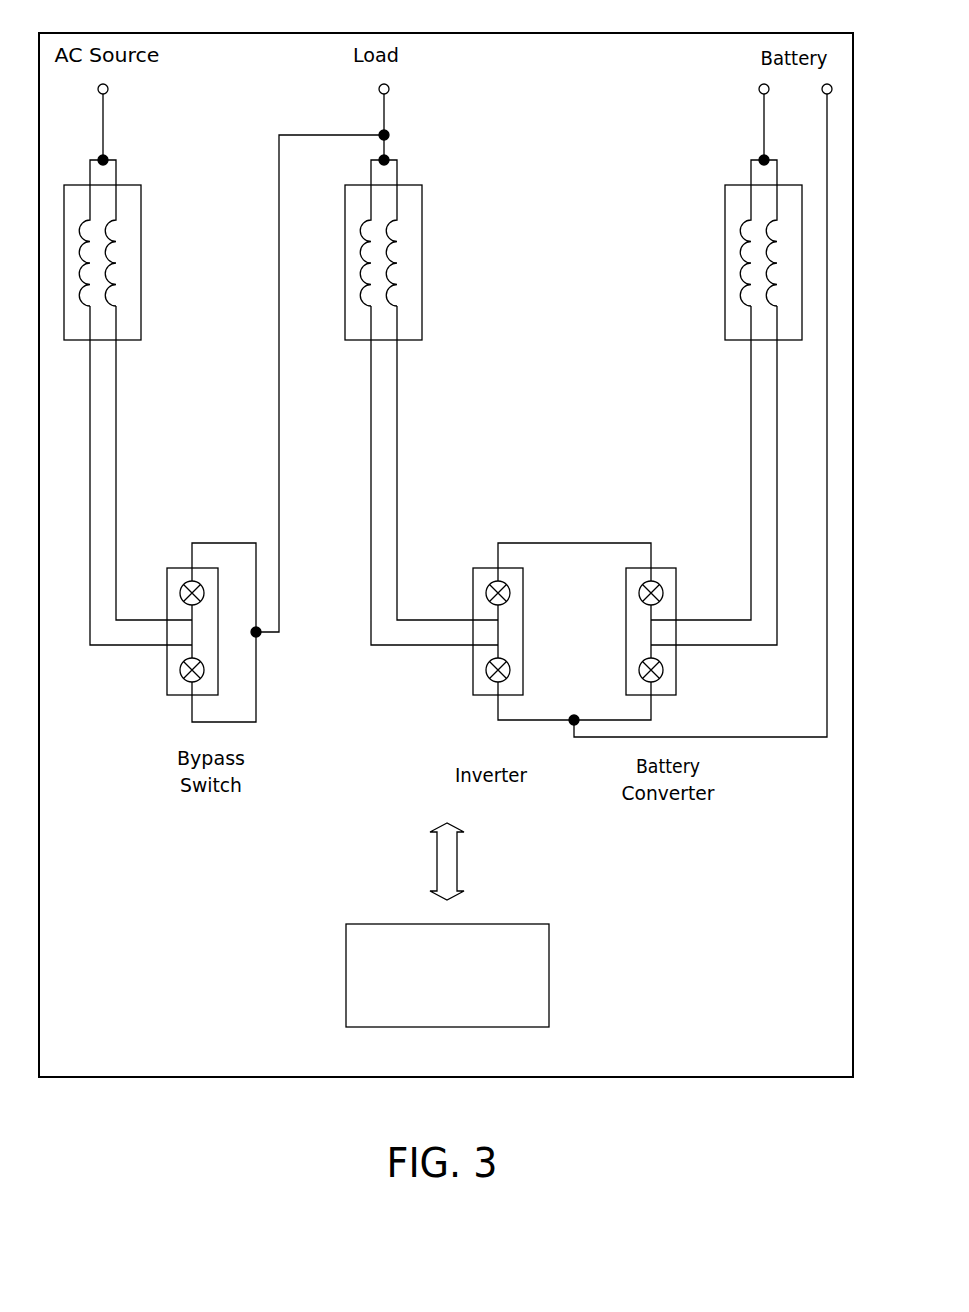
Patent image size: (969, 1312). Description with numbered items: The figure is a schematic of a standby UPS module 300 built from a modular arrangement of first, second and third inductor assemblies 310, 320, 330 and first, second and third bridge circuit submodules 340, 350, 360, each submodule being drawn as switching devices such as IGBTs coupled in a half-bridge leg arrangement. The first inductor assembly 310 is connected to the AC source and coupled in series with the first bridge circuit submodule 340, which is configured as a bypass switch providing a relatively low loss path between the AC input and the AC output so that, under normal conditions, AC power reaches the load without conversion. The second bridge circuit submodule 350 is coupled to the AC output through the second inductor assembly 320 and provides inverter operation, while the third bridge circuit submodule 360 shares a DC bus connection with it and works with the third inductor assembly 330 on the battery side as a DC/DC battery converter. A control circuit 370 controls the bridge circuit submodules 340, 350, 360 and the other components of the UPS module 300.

The UPS module 300 is at (448, 33).
The first inductor assembly 310 is at (141, 262).
The second inductor assembly 320 is at (422, 262).
The third inductor assembly 330 is at (725, 262).
The first bridge circuit submodule 340 is at (181, 568).
The second bridge circuit submodule 350 is at (485, 568).
The third bridge circuit submodule 360 is at (660, 568).
The control circuit 370 is at (549, 975).